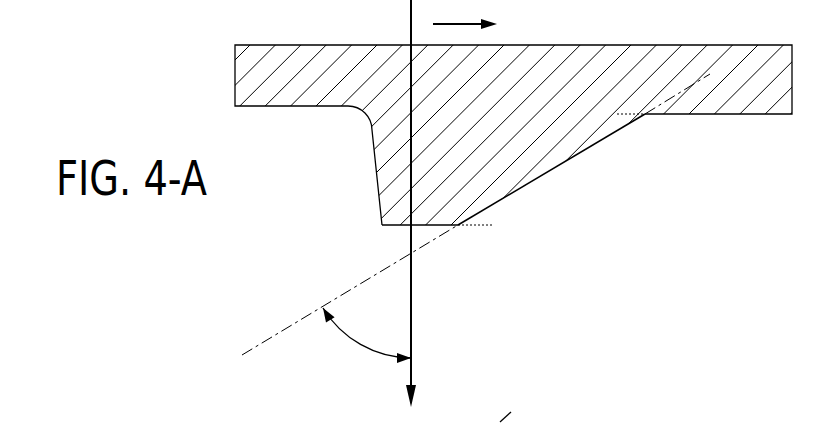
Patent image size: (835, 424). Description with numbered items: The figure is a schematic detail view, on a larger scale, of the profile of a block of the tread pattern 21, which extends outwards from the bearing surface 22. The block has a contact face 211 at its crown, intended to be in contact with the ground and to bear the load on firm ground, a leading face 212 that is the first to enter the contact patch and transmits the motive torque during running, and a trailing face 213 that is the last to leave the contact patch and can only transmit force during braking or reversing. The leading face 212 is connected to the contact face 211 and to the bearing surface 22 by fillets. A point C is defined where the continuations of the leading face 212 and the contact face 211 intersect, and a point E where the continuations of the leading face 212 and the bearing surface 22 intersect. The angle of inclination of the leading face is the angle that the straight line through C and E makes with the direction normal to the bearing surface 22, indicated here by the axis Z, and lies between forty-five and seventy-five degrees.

The tread pattern 21 is at (417, 150).
The bearing surface 22 is at (755, 114).
The contact face 211 is at (392, 236).
The leading face 212 is at (576, 157).
The trailing face 213 is at (375, 172).
The point E is at (645, 114).
The point C is at (458, 227).
The Z axis Z is at (424, 207).